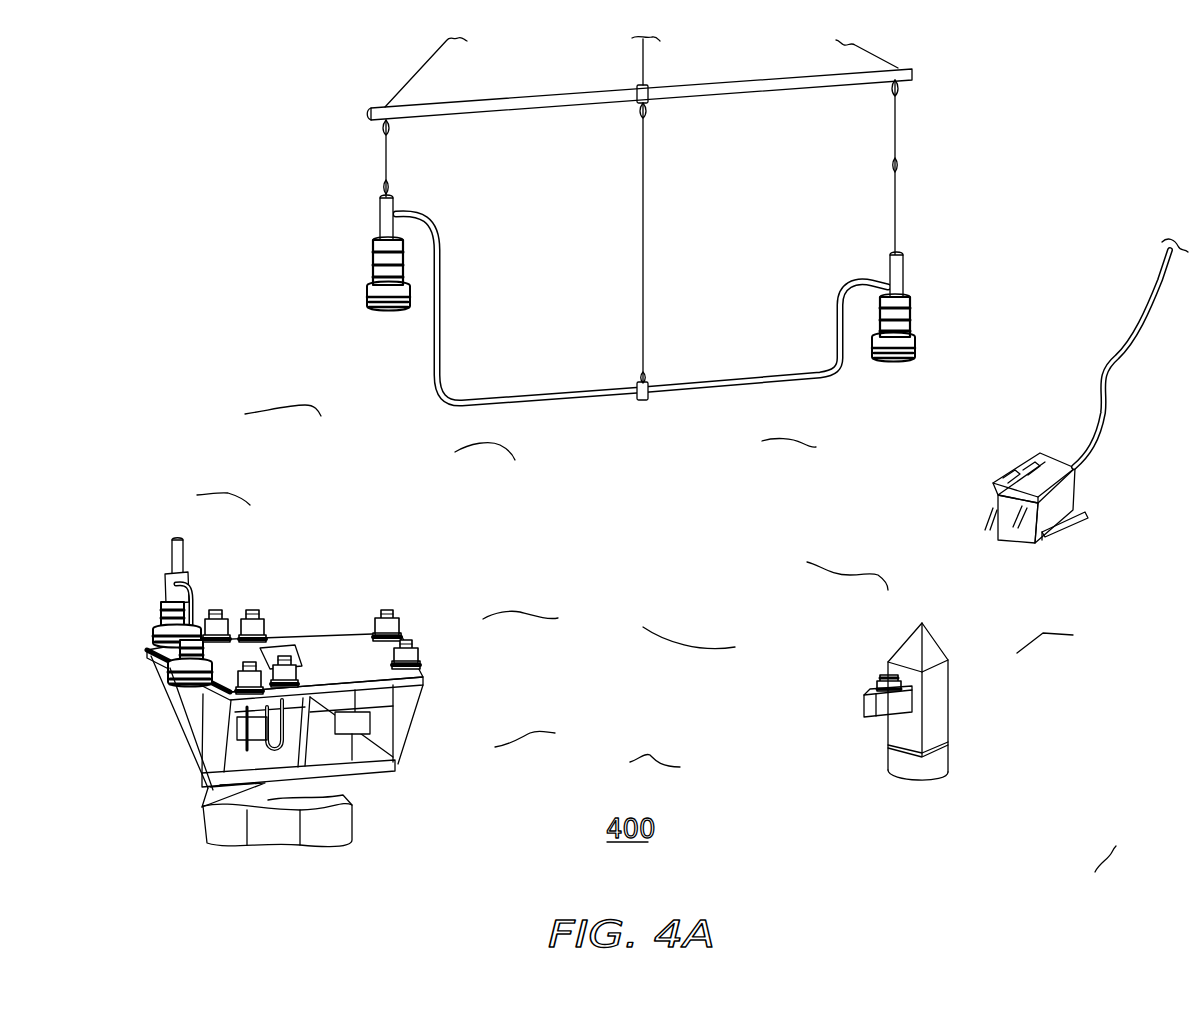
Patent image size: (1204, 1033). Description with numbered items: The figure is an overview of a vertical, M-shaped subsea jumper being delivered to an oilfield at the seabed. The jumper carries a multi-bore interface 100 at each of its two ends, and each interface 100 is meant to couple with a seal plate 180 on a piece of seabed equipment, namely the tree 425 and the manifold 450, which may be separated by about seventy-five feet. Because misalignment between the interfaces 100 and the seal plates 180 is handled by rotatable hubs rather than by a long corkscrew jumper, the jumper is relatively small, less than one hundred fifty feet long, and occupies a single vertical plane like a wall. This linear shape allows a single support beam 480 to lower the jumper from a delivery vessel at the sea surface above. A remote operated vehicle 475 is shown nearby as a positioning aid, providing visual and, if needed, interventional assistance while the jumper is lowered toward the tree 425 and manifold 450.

The support beam 480 is at (506, 100).
The multi-bore interface 100 is at (365, 296).
The manifold 450 is at (323, 648).
The seal plate 180 is at (385, 610).
The tree 425 is at (937, 712).
The remote operated vehicle (ROV) 475 is at (1065, 476).